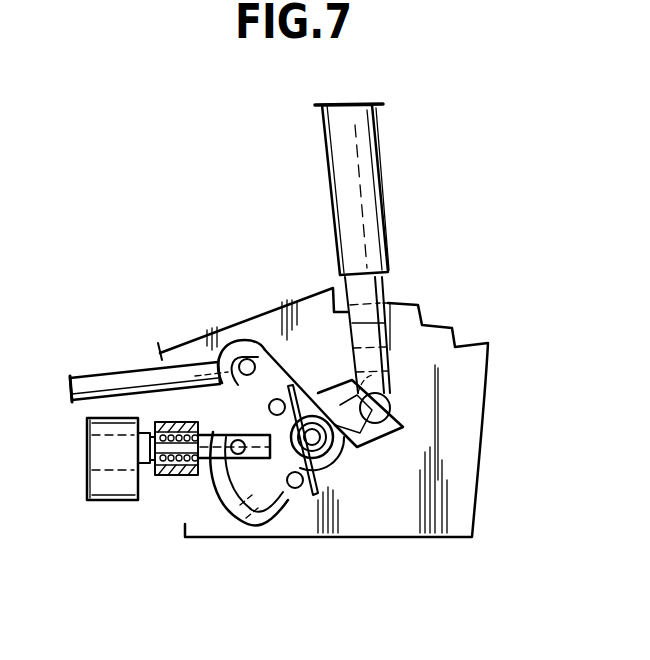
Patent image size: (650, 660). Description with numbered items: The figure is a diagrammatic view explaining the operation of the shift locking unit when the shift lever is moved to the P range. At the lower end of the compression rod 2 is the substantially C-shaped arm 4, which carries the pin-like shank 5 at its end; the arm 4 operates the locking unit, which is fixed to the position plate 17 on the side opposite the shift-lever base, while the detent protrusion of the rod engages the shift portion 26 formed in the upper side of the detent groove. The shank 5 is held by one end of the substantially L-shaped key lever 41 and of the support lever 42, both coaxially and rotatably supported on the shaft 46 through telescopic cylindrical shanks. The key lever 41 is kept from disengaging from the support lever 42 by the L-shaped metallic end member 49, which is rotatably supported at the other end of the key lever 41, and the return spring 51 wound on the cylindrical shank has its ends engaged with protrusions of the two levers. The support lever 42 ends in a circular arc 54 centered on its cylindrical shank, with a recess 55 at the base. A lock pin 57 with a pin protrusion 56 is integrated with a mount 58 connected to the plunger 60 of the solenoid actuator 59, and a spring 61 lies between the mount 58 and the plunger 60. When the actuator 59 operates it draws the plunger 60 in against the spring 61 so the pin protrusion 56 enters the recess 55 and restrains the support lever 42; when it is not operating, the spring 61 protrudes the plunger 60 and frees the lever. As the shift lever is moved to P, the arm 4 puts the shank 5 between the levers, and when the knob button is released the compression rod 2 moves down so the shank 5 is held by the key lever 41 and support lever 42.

The compression rod 2 is at (368, 186).
The arm 4 is at (378, 360).
The shank 5 is at (377, 405).
The position plate 17 is at (453, 485).
The shift portion 26 is at (468, 342).
The key lever 41 is at (380, 433).
The support lever 42 is at (342, 380).
The shaft 46 is at (325, 458).
The end member 49 is at (92, 385).
The return spring 51 is at (365, 455).
The circular arc 54 is at (273, 487).
The recess 55 is at (238, 517).
The pin protrusion 56 is at (200, 436).
The lock pin 57 is at (252, 426).
The mount 58 is at (170, 475).
The actuator 59 is at (95, 500).
The plunger 60 is at (180, 422).
The spring 61 is at (199, 458).